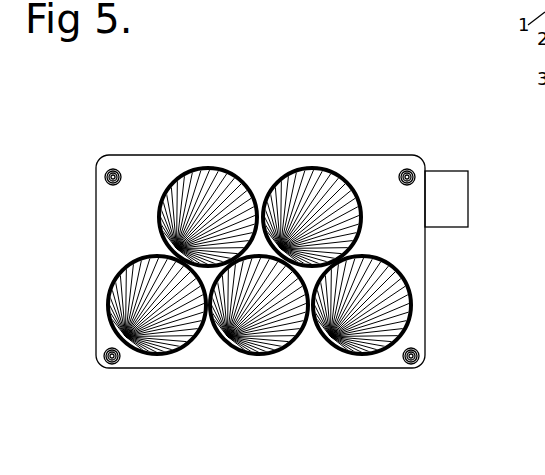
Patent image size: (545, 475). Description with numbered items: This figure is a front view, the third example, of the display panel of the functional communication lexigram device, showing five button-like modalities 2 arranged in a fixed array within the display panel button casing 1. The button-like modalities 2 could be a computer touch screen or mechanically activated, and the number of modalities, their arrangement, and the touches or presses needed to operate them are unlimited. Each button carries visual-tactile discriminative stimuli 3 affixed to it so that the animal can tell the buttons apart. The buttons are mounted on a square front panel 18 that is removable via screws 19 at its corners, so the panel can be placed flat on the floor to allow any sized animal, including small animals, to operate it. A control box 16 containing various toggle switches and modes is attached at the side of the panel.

The display panel button casing 1 is at (184, 170).
The button-like modalities 2 is at (233, 184).
The visual-tactile discriminative stimuli 3 is at (208, 193).
The control box 16 is at (470, 202).
The square front panel 18 is at (377, 176).
The screws 19 is at (113, 168).